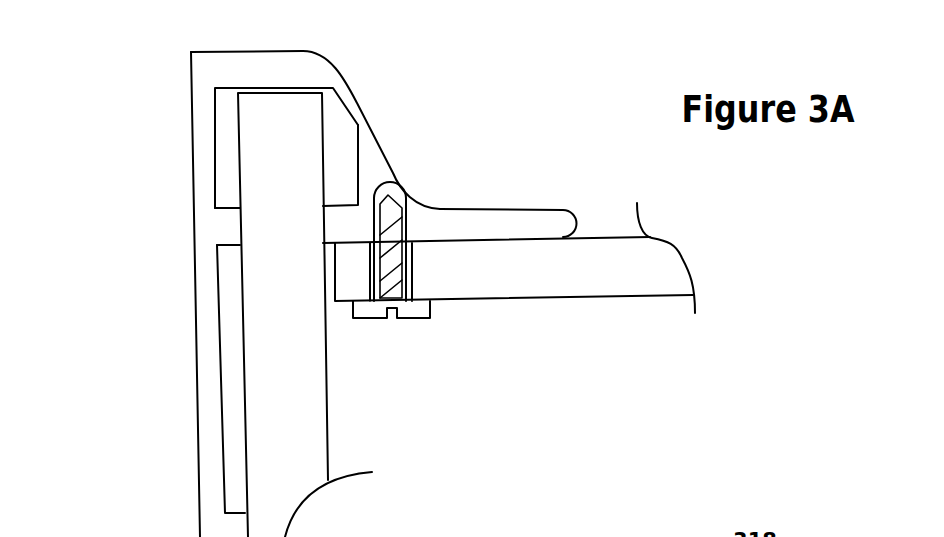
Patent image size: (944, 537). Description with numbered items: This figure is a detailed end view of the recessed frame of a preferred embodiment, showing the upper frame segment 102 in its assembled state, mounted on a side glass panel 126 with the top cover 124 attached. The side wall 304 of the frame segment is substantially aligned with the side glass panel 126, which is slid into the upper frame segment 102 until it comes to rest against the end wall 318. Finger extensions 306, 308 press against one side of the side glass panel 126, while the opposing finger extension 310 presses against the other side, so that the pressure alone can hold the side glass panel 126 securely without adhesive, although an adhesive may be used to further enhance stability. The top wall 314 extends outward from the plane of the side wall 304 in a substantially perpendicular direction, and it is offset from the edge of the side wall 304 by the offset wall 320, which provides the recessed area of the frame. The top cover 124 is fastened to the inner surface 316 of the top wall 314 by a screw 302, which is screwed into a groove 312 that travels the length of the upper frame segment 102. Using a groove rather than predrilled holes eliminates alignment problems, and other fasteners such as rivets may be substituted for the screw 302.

The upper frame segment 102 is at (140, 65).
The top cover 124 is at (347, 267).
The side glass panel 126 is at (305, 393).
The screw 302 is at (415, 318).
The side wall 304 is at (212, 377).
The finger extension 306 is at (233, 527).
The finger extension 308 is at (232, 219).
The opposing finger extension 310 is at (340, 213).
The groove 312 is at (390, 185).
The top wall 314 is at (493, 217).
The inner surface 316 is at (510, 240).
The end wall 318 is at (277, 85).
The offset wall 320 is at (351, 100).